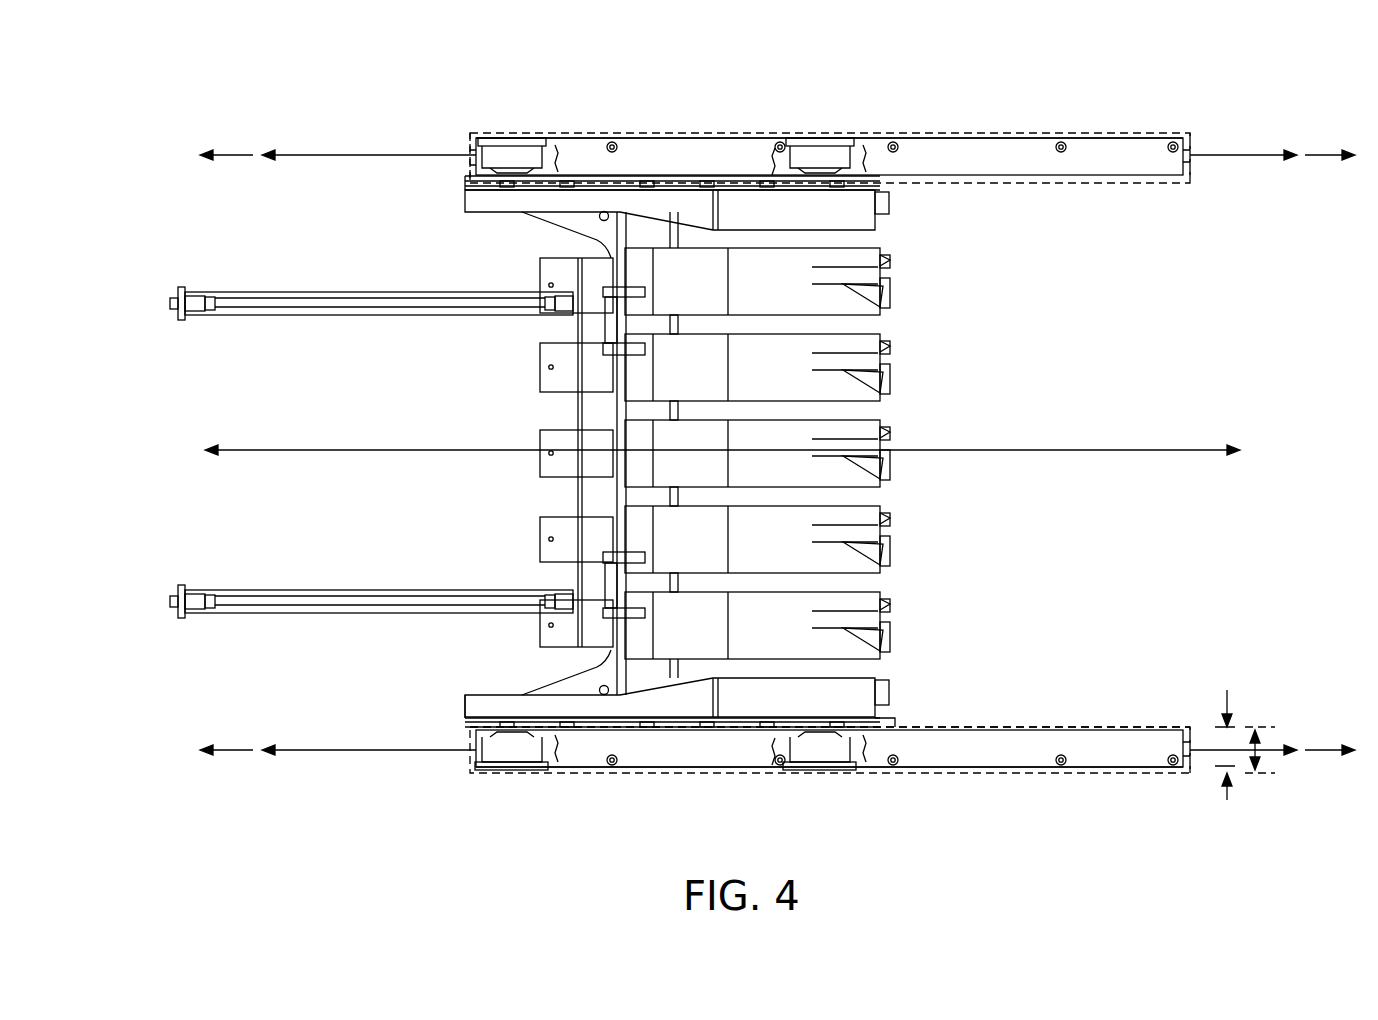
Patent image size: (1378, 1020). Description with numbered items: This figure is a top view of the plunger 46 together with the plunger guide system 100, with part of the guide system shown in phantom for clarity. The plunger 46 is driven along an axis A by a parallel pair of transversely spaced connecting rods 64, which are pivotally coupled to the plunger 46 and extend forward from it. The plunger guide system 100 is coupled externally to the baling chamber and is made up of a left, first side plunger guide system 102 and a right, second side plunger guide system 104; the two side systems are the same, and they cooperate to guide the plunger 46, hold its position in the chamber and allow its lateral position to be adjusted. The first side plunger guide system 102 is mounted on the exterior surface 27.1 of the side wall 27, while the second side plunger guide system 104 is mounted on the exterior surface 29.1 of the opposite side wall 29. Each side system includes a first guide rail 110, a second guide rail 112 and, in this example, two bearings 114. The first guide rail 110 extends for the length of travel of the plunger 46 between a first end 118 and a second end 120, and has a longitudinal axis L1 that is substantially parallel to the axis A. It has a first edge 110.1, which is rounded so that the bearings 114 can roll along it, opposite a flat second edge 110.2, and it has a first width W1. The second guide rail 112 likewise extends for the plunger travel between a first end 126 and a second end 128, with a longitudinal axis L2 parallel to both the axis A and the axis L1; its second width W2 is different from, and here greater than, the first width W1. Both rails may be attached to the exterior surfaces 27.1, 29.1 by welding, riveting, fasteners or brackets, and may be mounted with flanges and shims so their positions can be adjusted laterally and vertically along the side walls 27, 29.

The plunger guide system 100 is at (802, 53).
The first side plunger guide system 102 is at (787, 837).
The second side plunger guide system 104 is at (801, 427).
The first guide rail 110 is at (1075, 792).
The first edge 110.1 is at (1020, 134).
The second edge 110.2 is at (1025, 727).
The second guide rail 112 is at (1117, 118).
The bearing 114 is at (533, 794).
The first end 118 is at (469, 731).
The second end 120 is at (1189, 749).
The first end 126 is at (472, 151).
The second end 128 is at (1187, 148).
The side wall 27 is at (892, 721).
The exterior surface 27.1 is at (648, 727).
The side wall 29 is at (456, 181).
The exterior surface 29.1 is at (731, 176).
The plunger 46 is at (888, 367).
The connecting rods 64 is at (338, 316).
The axis A is at (1075, 450).
The longitudinal axis L1 is at (1238, 156).
The longitudinal axis L2 is at (1338, 780).
The first width W1 is at (1228, 782).
The second width W2 is at (1258, 750).